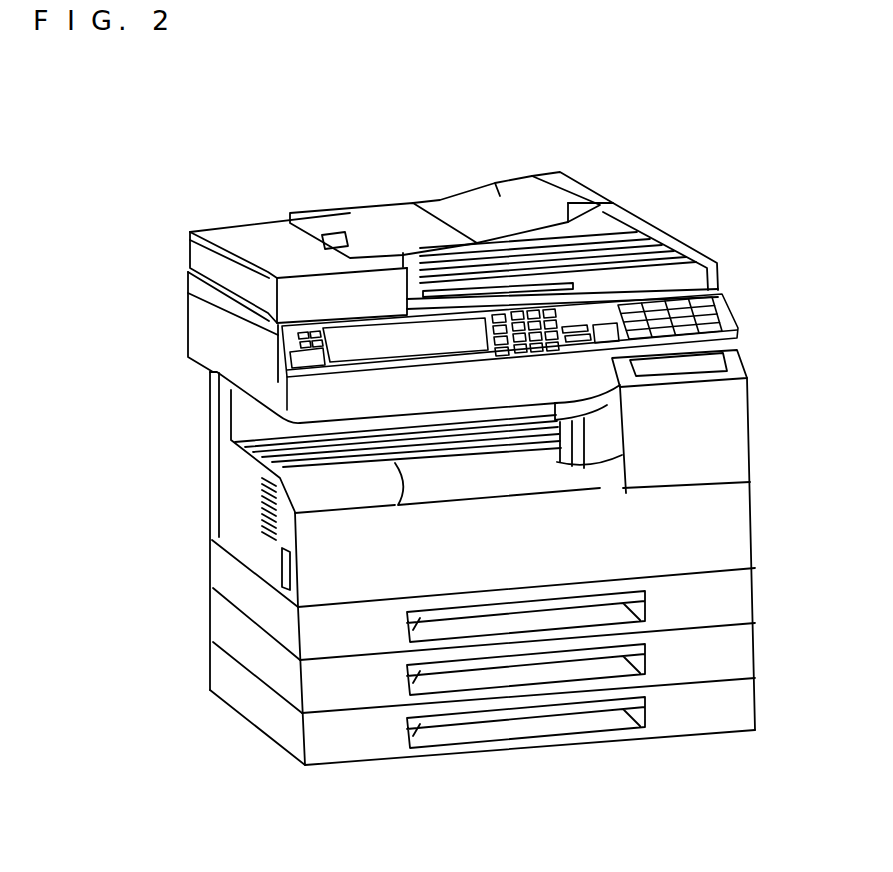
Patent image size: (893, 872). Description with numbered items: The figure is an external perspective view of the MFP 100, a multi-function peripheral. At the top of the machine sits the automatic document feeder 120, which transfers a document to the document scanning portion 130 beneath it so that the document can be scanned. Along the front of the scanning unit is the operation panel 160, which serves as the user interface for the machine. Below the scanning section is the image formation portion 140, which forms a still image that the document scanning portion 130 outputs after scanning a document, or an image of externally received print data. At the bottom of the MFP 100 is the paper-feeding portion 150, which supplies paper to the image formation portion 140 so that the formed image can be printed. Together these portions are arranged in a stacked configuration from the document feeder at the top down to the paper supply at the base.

The MFP 100 is at (203, 92).
The automatic document feeder 120 is at (248, 222).
The document scanning portion 130 is at (188, 323).
The image formation portion 140 is at (210, 470).
The paper-feeding portion 150 is at (196, 530).
The operation panel 160 is at (582, 319).